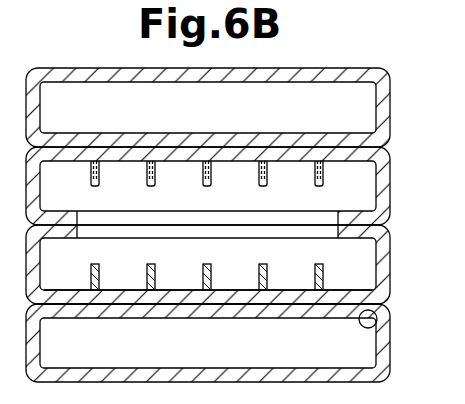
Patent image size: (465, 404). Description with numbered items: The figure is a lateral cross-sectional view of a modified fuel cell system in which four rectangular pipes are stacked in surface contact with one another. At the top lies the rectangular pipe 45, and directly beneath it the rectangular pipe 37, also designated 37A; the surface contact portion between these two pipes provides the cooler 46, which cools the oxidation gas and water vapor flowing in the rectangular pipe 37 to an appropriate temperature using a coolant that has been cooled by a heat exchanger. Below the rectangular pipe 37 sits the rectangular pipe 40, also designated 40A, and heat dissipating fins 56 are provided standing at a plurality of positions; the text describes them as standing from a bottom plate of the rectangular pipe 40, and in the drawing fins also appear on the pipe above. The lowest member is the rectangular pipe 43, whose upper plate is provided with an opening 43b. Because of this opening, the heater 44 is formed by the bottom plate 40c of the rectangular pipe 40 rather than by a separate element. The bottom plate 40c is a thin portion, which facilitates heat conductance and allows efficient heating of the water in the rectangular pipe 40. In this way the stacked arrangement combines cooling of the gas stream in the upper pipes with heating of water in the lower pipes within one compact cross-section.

The rectangular pipe 45 is at (235, 107).
The cooler 46 is at (252, 120).
The rectangular pipe 37 is at (242, 192).
The rectangular pipe 37A is at (407, 175).
The heat dissipating fins 56 is at (255, 201).
The rectangular pipe 40 is at (242, 291).
The rectangular pipe 40A is at (242, 264).
The bottom plate 40c is at (193, 297).
The rectangular pipe 43 is at (245, 343).
The opening 43b is at (378, 322).
The heater 44 is at (144, 330).